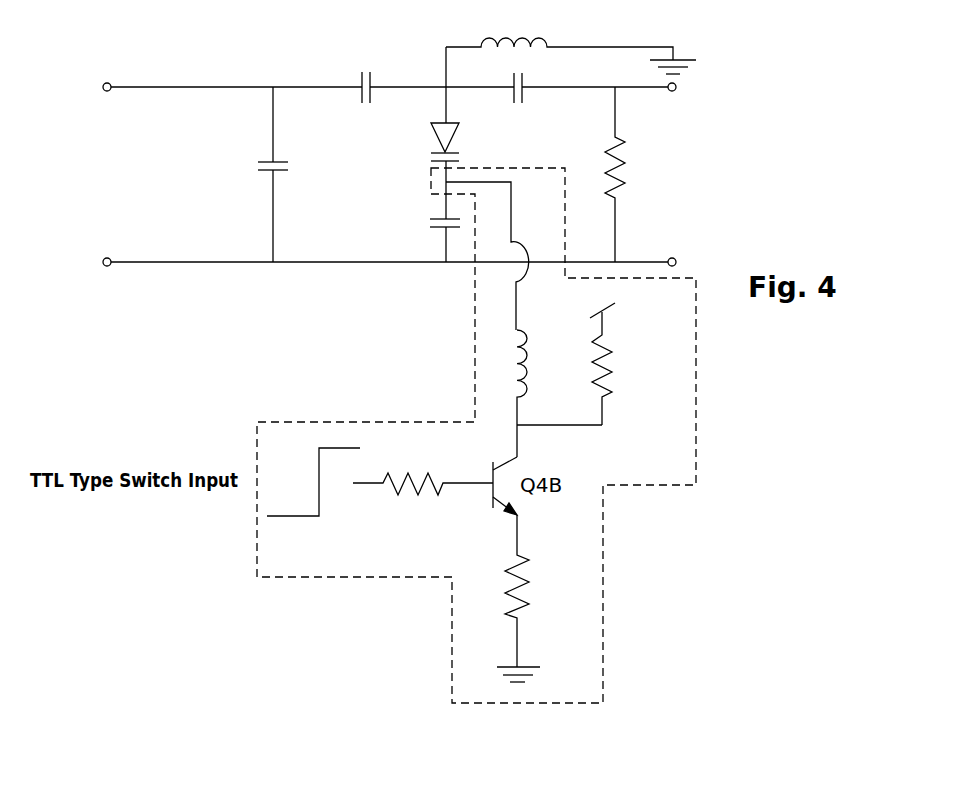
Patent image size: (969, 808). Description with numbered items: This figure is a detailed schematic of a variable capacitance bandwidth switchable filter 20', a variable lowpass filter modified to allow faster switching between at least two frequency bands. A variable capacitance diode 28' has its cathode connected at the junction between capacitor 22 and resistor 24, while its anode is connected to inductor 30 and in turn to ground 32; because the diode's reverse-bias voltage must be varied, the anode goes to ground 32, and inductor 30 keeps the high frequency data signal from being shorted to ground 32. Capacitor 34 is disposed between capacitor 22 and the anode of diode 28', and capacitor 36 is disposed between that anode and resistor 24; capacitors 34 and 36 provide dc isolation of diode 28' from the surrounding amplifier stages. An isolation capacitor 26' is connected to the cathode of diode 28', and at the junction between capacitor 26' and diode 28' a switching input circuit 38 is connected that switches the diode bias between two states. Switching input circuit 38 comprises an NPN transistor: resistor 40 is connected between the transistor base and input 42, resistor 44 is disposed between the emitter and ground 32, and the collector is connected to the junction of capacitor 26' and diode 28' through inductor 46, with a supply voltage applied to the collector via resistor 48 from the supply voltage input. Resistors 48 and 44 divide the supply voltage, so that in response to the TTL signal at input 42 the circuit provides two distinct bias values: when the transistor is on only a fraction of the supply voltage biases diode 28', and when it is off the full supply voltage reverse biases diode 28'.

The variable capacitance bandwidth switchable filter 20' is at (428, 351).
The capacitor 22 is at (290, 174).
The resistor 24 is at (632, 174).
The isolation capacitor 26' is at (426, 222).
The variable capacitance diode 28' is at (464, 152).
The inductor 30 is at (559, 69).
The ground 32 is at (611, 362).
The capacitor 34 is at (360, 75).
The capacitor 36 is at (533, 97).
The switching input circuit 38 is at (696, 435).
The resistor 40 is at (423, 470).
The input 42 is at (303, 516).
The resistor 44 is at (532, 591).
The inductor 46 is at (542, 393).
The resistor 48 is at (626, 358).